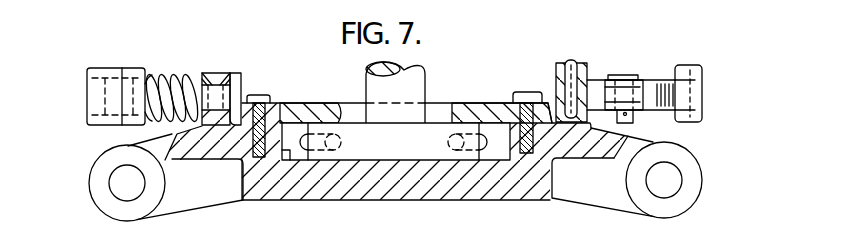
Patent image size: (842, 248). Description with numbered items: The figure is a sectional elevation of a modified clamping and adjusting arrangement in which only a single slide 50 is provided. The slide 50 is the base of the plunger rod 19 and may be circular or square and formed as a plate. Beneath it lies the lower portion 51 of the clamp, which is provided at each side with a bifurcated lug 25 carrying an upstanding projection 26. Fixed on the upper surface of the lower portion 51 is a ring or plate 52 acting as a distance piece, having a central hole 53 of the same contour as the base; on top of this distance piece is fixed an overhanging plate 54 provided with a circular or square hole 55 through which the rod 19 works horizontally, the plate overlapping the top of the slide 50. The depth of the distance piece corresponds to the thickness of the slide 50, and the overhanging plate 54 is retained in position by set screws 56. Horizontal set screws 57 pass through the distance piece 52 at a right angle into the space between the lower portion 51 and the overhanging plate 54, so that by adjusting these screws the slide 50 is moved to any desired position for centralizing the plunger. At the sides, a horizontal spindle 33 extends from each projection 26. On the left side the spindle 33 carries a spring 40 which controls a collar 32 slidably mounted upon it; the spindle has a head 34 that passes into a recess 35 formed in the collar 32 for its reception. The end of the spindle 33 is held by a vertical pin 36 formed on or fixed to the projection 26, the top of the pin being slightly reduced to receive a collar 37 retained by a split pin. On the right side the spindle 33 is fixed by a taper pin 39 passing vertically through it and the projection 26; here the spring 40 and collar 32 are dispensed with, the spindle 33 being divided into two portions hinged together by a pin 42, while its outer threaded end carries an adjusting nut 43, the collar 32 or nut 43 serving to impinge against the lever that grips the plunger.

The plunger rod 19 is at (395, 92).
The bifurcated lug 25 is at (698, 198).
The upstanding projection 26 is at (558, 63).
The collar 32 is at (97, 68).
The horizontal spindle 33 is at (695, 140).
The head 34 is at (105, 93).
The recess 35 is at (88, 115).
The vertical pin 36 is at (217, 73).
The collar 37 is at (233, 80).
The taper pin 39 is at (570, 63).
The spring 40 is at (157, 78).
The pin 42 is at (637, 75).
The nut 43 is at (702, 75).
The slide 50 is at (396, 141).
The lower portion 51 is at (323, 197).
The ring or plate 52 is at (502, 158).
The hole 53 is at (490, 128).
The plate 54 is at (335, 103).
The hole 55 is at (443, 108).
The set screw 56 is at (527, 100).
The horizontal set screw 57 is at (340, 152).